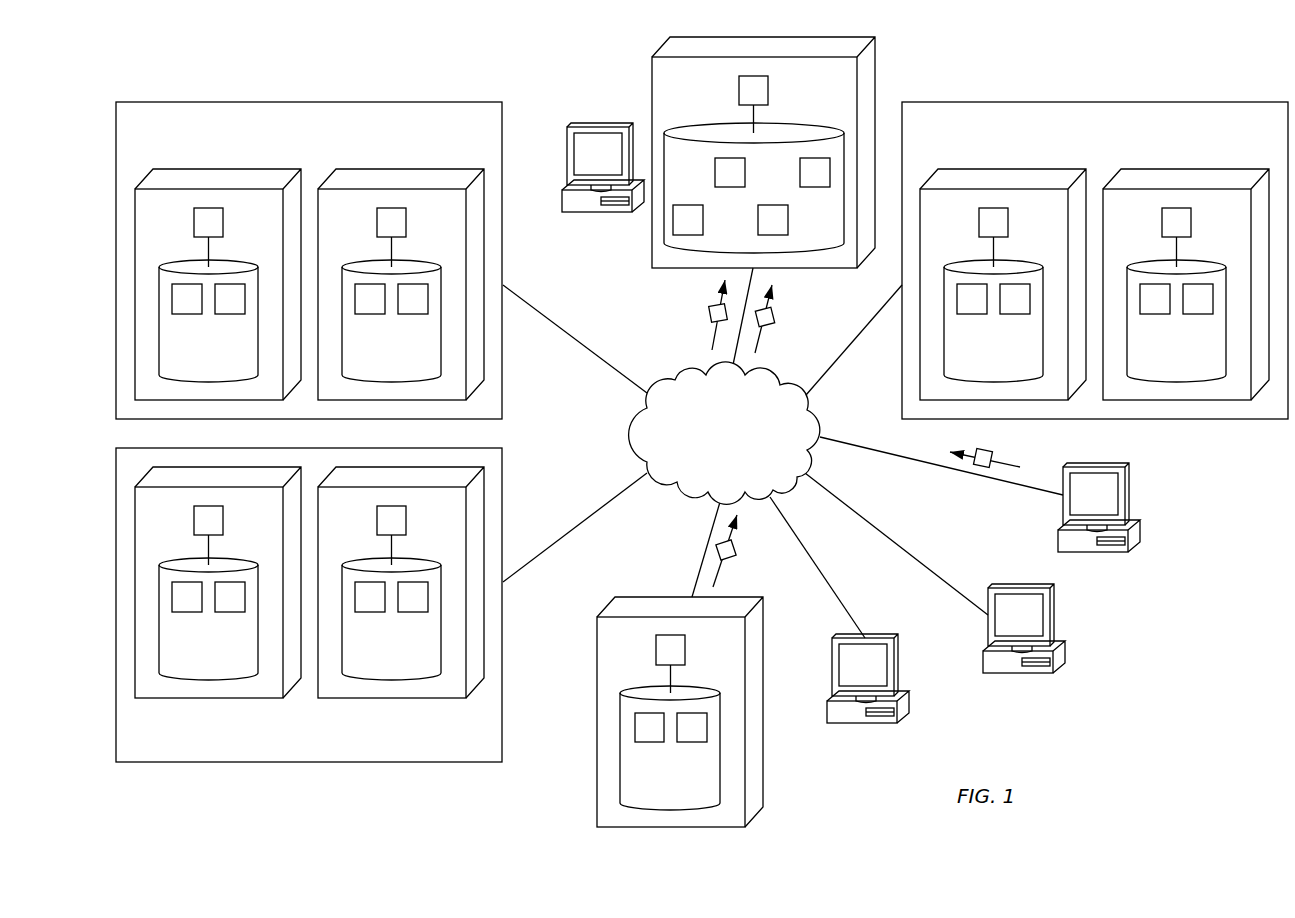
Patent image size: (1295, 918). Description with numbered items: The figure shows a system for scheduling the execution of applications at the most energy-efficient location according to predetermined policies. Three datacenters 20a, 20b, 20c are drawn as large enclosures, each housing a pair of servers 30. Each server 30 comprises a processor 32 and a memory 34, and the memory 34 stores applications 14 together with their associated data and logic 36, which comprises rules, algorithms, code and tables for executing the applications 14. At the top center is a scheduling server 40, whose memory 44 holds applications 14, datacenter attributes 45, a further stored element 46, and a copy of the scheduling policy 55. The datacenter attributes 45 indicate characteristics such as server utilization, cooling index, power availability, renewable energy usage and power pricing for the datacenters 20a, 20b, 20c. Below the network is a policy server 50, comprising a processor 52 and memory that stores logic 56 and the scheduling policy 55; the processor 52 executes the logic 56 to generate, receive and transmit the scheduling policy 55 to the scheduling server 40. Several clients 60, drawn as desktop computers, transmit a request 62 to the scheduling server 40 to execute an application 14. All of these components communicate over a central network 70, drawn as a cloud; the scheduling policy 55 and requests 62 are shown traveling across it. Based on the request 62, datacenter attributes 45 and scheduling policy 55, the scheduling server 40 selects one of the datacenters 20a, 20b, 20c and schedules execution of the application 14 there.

The datacenter 20a is at (292, 100).
The datacenter 20b is at (295, 765).
The datacenter 20c is at (1107, 100).
The server 30 is at (195, 165).
The processor 32 is at (223, 222).
The memory 34 is at (180, 257).
The application 14 is at (187, 314).
The logic 36 is at (230, 314).
The scheduling server 40 is at (650, 104).
The memory 44 is at (712, 125).
The datacenter attributes 45 is at (732, 187).
The index 46 is at (772, 205).
The scheduling policy 55 is at (817, 187).
The request 62 is at (773, 322).
The network 70 is at (740, 443).
The policy server 50 is at (597, 735).
The processor 52 is at (685, 652).
The logic 56 is at (649, 742).
The client 60 is at (1107, 553).